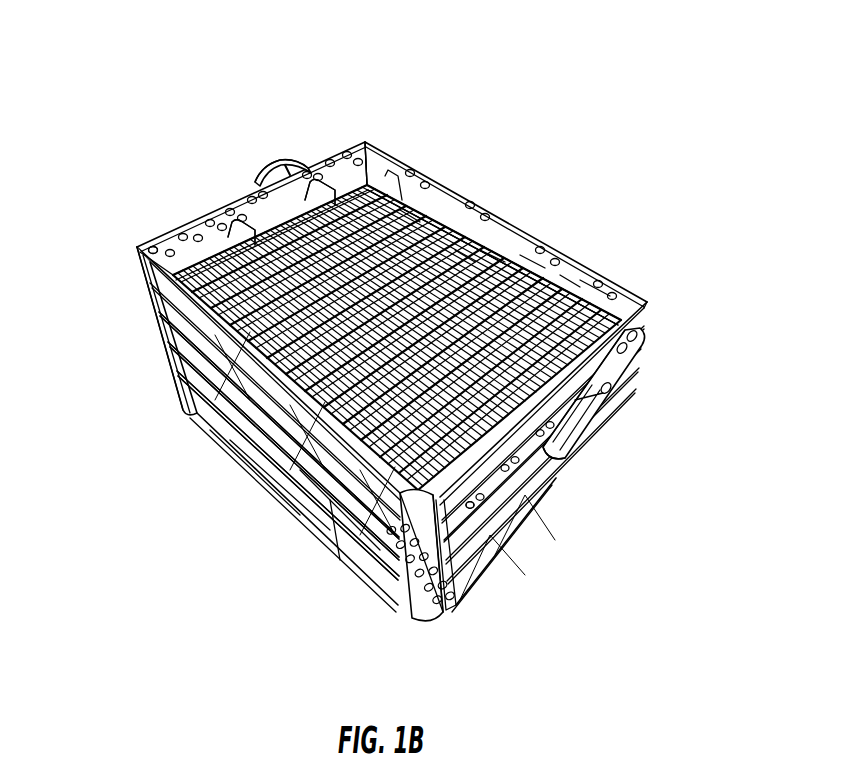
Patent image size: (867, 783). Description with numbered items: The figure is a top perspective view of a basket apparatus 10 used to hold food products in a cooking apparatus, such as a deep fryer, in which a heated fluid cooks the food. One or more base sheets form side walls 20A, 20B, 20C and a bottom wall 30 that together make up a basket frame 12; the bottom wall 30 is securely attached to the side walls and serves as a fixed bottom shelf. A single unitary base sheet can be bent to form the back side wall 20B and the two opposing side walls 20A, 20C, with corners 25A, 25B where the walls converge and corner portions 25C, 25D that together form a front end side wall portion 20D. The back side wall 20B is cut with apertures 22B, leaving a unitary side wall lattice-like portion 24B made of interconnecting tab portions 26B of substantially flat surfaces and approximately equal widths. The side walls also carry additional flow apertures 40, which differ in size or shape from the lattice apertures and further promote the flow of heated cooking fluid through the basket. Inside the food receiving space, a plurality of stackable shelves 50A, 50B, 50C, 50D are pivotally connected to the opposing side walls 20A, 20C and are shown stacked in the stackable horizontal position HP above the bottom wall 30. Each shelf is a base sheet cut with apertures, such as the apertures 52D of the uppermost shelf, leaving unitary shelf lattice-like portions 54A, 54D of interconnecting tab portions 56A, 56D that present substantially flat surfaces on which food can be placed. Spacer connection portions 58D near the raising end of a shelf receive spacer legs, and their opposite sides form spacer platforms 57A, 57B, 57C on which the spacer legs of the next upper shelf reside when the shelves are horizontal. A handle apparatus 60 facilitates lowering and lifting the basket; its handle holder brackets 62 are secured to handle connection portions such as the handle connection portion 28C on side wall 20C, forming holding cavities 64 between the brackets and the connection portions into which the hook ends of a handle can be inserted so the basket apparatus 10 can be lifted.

The basket apparatus 10 is at (108, 62).
The basket frame 12 is at (175, 270).
The side wall 20A is at (520, 435).
The back side wall 20B is at (600, 290).
The side wall 20C is at (225, 215).
The front end side wall portion 20D is at (205, 298).
The aperture 22B is at (592, 282).
The side wall lattice-like portion 24B is at (577, 288).
The corner 25A is at (366, 150).
The corner 25B is at (652, 302).
The corner portion 25C is at (143, 266).
The corner portion 25D is at (422, 578).
The interconnecting tab portion 26B is at (535, 265).
The handle connection portion 28C is at (300, 190).
The bottom wall 30 is at (312, 540).
The flow aperture 40 is at (225, 248).
The stackable shelf 50A is at (255, 450).
The stackable shelf 50B is at (235, 430).
The stackable shelf 50C is at (190, 388).
The stackable shelf 50D is at (200, 328).
The aperture 52D is at (470, 260).
The shelf lattice-like portion 54A is at (360, 476).
The shelf lattice-like portion 54D is at (498, 255).
The interconnecting tab portion 56A is at (300, 440).
The interconnecting tab portion 56D is at (410, 215).
The spacer platform 57A is at (225, 418).
The spacer platform 57B is at (215, 373).
The spacer platform 57C is at (232, 331).
The spacer connection portion 58D is at (200, 270).
The handle apparatus 60 is at (272, 153).
The handle holder bracket 62 is at (262, 162).
The holding cavity 64 is at (289, 164).
The stackable horizontal position HP is at (332, 518).